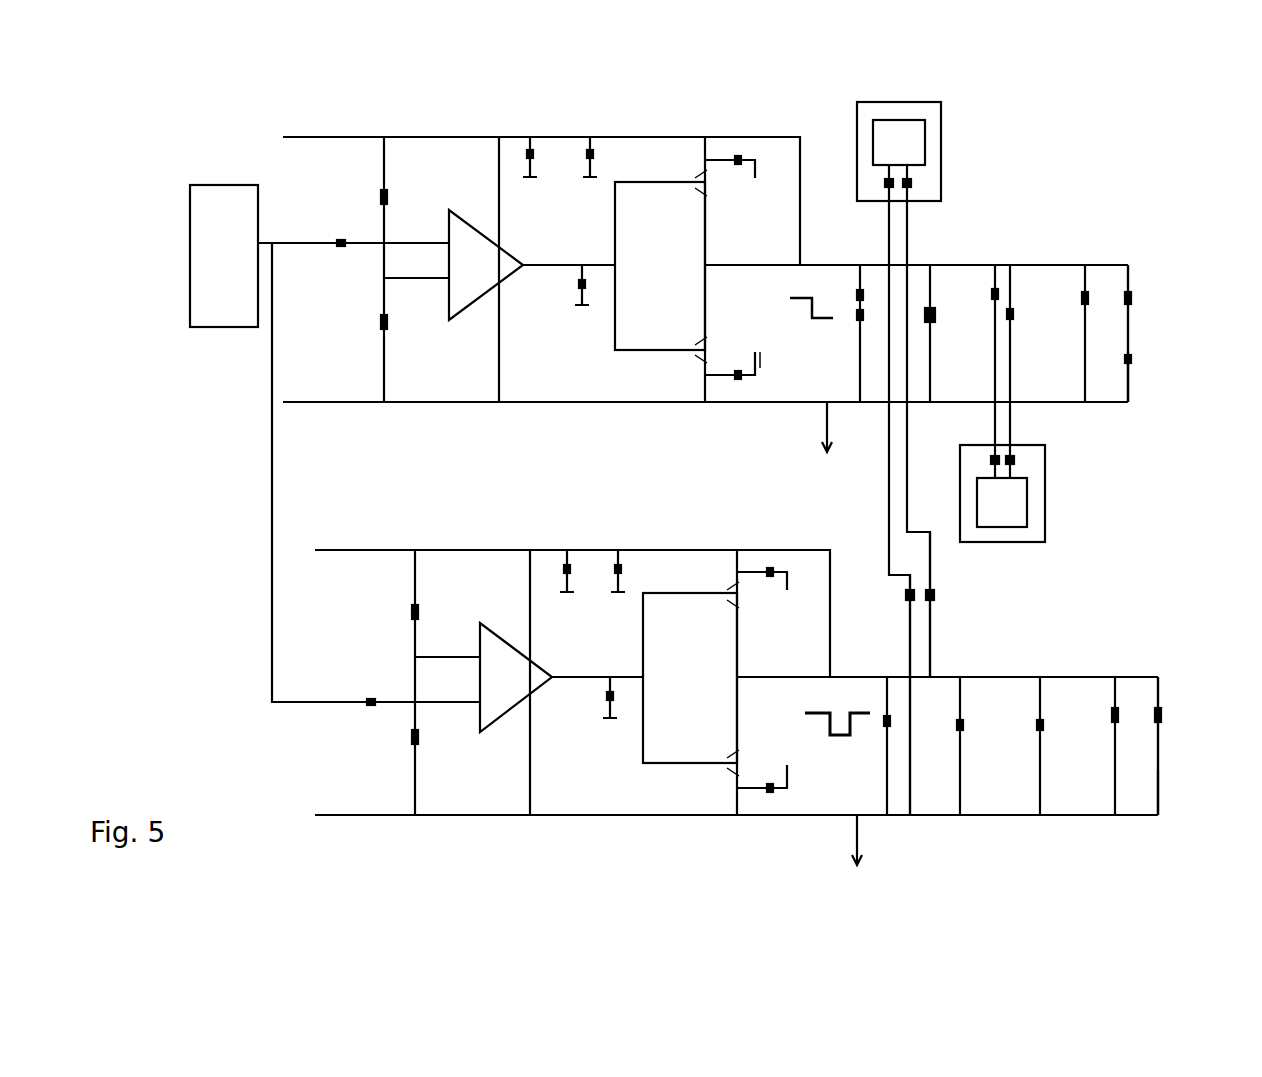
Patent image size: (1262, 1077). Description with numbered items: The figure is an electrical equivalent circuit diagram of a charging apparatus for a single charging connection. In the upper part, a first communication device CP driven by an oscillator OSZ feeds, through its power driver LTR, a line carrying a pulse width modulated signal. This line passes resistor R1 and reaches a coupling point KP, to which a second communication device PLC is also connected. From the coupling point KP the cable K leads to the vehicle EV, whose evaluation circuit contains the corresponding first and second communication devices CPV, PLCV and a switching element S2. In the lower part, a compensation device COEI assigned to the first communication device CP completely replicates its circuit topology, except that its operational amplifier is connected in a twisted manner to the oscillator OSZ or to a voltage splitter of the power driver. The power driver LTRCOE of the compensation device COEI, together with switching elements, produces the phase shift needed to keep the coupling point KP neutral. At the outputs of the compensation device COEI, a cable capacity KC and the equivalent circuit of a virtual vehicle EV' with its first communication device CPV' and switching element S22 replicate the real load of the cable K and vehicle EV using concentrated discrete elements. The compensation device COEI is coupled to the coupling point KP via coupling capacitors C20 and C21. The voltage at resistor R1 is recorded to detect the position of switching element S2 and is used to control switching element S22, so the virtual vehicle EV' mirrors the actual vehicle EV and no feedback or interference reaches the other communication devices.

The first communication device CP is at (510, 105).
The oscillator OSZ is at (190, 282).
The power driver LTR is at (648, 137).
The second communication device PLC is at (940, 145).
The coupling point KP is at (888, 528).
The second communication device of vehicle PLCV is at (1047, 482).
The resistor R1 is at (845, 264).
The cable K is at (940, 325).
The vehicle EV is at (1065, 278).
The first communication device of vehicle CPV is at (1124, 285).
The switching element S2 is at (1130, 357).
The compensation device COEI is at (315, 737).
The power driver of compensation device LTRCOE is at (555, 785).
The coupling capacitor C21 is at (876, 695).
The coupling capacitor C20 is at (935, 595).
The cable capacity KC is at (975, 735).
The virtual vehicle EV' is at (1117, 763).
The first communication device of virtual vehicle CPV' is at (1136, 702).
The switching element of virtual vehicle S22 is at (1152, 778).